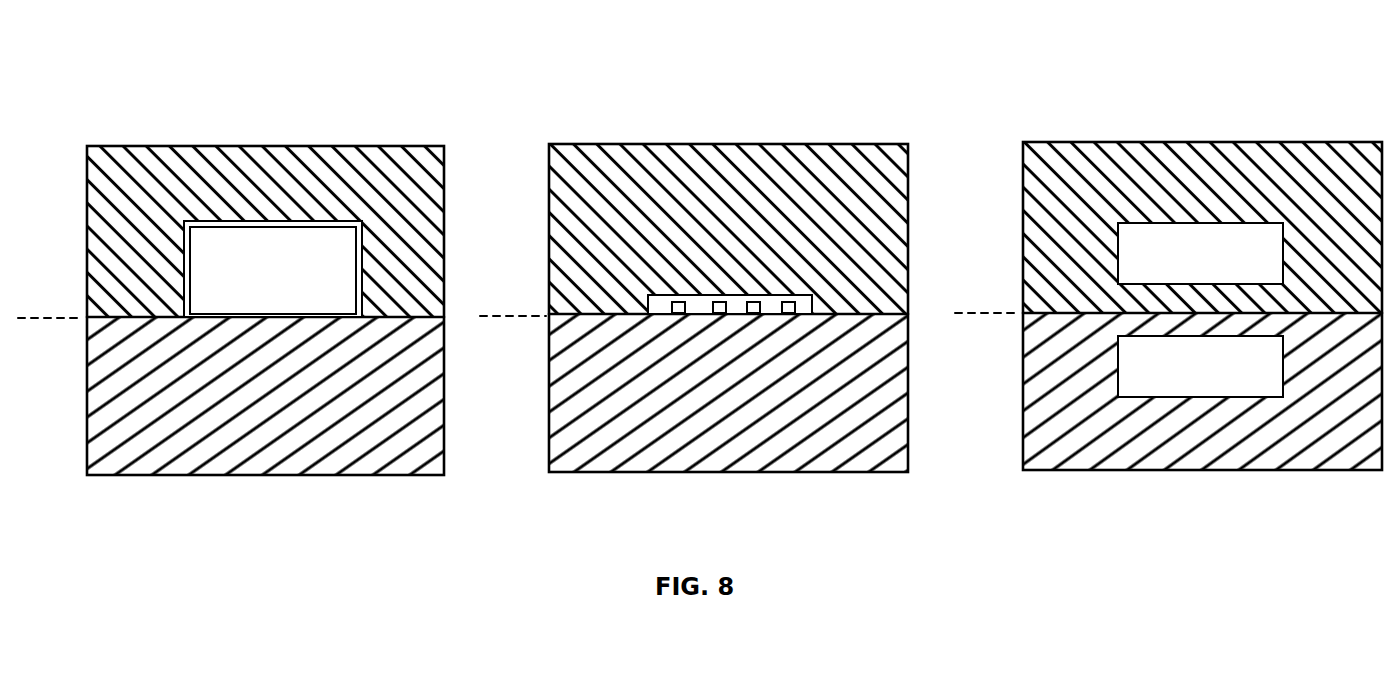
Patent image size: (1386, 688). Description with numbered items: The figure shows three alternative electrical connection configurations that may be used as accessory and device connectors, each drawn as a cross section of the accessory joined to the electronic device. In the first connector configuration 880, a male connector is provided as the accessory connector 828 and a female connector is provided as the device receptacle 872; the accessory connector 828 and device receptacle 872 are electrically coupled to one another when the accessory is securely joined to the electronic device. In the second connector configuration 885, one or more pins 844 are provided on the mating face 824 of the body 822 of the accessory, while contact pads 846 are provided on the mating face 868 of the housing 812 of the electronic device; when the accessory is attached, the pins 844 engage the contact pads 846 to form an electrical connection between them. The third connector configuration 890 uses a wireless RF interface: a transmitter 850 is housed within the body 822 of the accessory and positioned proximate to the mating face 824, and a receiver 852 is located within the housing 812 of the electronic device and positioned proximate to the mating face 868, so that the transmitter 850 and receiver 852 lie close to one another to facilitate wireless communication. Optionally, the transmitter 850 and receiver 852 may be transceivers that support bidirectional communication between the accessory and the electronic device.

The connector configuration 880 is at (231, 261).
The device receptacle 872 is at (186, 239).
The accessory connector 828 is at (205, 281).
The connector configuration 885 is at (873, 126).
The housing 812 is at (577, 168).
The body 822 is at (578, 443).
The mating face 868 is at (551, 312).
The mating face 824 is at (551, 318).
The contact pads 846 is at (708, 295).
The pins 844 is at (792, 314).
The connector configuration 890 is at (1343, 124).
The receiver 852 is at (1218, 267).
The transmitter 850 is at (1218, 379).